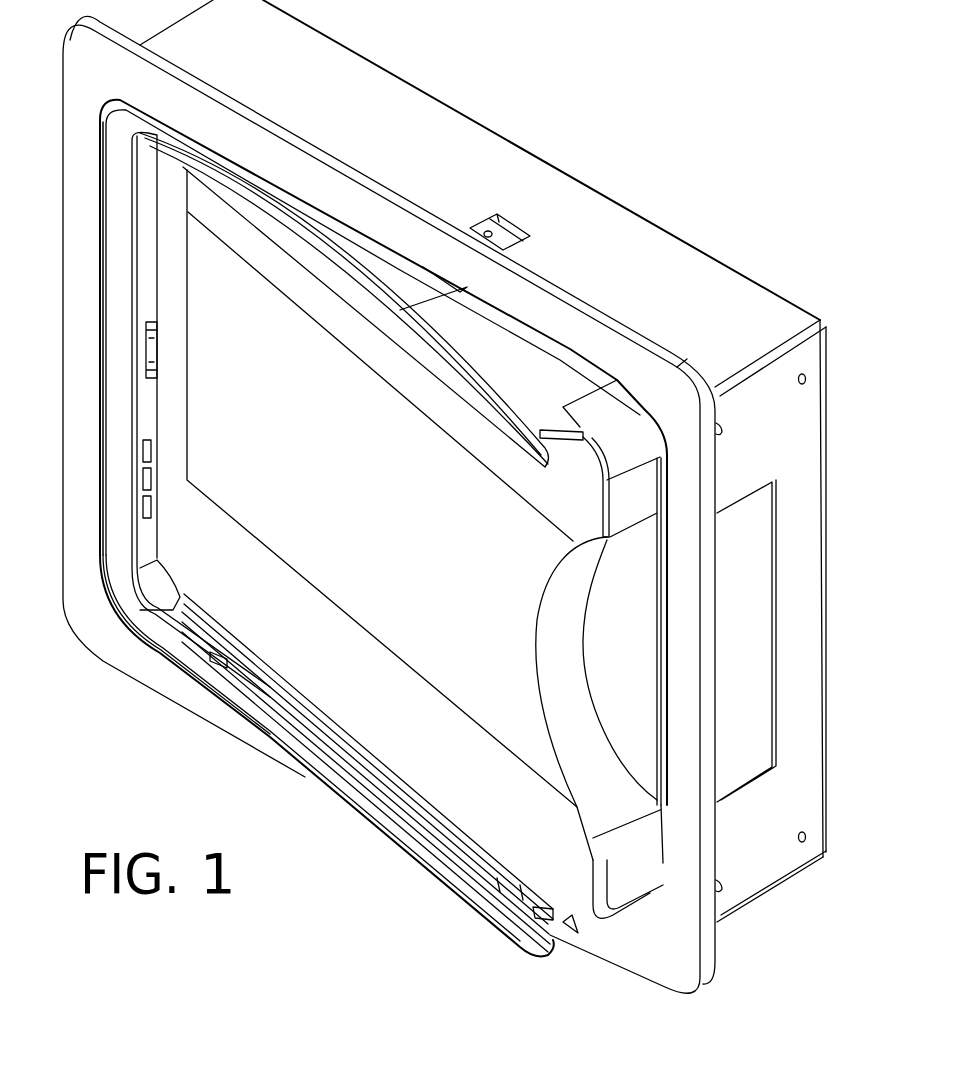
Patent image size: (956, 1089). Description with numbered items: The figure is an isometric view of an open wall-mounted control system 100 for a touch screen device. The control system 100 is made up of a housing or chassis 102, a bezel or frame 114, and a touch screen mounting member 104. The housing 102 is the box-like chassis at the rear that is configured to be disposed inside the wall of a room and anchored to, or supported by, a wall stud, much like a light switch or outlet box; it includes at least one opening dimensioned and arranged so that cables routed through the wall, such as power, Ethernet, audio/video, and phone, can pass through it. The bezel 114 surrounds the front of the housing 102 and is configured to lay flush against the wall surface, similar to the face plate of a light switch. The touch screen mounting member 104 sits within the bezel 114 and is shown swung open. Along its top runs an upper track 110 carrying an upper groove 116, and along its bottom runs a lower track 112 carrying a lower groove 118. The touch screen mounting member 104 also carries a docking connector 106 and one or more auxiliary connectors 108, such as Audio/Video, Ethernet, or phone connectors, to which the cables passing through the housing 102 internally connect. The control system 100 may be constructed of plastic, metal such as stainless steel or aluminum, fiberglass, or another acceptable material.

The wall-mounted control system 100 is at (557, 133).
The housing 102 is at (675, 296).
The touch screen mounting member 104 is at (450, 570).
The docking connector 106 is at (150, 352).
The auxiliary connectors 108 is at (150, 446).
The upper track 110 is at (400, 343).
The lower track 112 is at (298, 690).
The bezel 114 is at (286, 133).
The upper groove 116 is at (567, 440).
The lower groove 118 is at (517, 900).